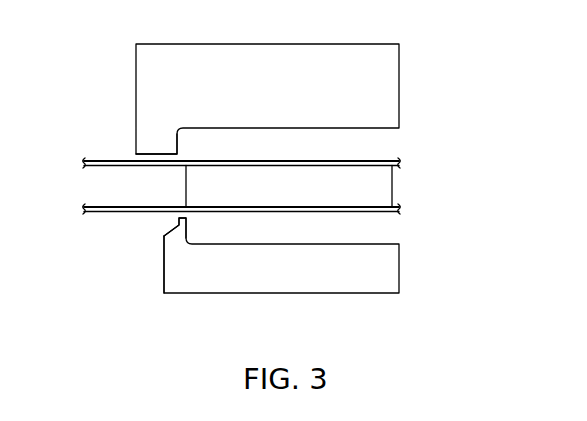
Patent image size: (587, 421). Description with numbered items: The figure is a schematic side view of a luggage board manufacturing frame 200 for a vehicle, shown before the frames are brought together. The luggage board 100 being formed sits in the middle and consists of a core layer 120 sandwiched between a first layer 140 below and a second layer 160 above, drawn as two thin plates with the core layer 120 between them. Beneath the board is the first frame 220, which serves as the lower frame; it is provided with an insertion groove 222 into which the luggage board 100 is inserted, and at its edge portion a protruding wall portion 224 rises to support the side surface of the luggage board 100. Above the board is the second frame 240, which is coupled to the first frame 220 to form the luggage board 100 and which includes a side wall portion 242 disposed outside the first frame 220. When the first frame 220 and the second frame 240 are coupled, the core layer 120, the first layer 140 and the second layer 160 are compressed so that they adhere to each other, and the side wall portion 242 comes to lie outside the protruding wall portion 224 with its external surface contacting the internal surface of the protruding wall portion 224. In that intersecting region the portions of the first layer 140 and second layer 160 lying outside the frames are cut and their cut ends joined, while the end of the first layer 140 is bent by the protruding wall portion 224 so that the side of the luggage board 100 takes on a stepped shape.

The luggage board 100 is at (455, 143).
The core layer 120 is at (377, 182).
The first layer 140 is at (383, 223).
The second layer 160 is at (383, 157).
The luggage board manufacturing frame 200 is at (516, 74).
The first frame 220 is at (378, 268).
The insertion groove 222 is at (217, 229).
The protruding wall portion 224 is at (177, 220).
The second frame 240 is at (378, 84).
The side wall portion 242 is at (150, 142).